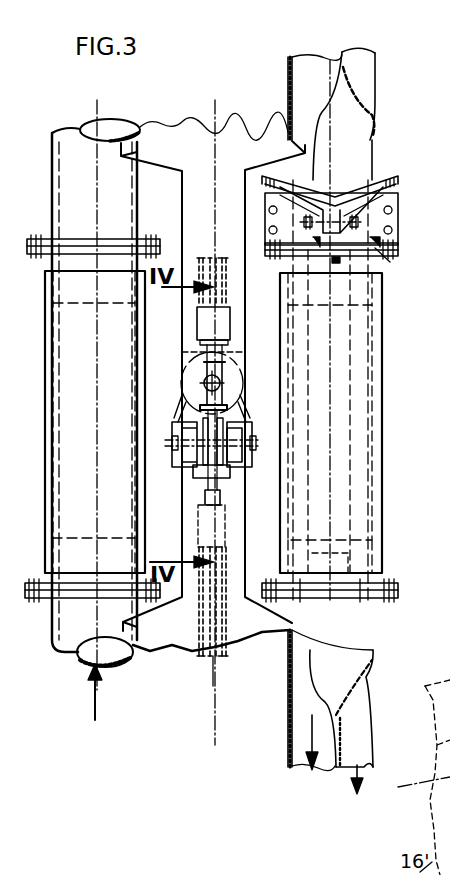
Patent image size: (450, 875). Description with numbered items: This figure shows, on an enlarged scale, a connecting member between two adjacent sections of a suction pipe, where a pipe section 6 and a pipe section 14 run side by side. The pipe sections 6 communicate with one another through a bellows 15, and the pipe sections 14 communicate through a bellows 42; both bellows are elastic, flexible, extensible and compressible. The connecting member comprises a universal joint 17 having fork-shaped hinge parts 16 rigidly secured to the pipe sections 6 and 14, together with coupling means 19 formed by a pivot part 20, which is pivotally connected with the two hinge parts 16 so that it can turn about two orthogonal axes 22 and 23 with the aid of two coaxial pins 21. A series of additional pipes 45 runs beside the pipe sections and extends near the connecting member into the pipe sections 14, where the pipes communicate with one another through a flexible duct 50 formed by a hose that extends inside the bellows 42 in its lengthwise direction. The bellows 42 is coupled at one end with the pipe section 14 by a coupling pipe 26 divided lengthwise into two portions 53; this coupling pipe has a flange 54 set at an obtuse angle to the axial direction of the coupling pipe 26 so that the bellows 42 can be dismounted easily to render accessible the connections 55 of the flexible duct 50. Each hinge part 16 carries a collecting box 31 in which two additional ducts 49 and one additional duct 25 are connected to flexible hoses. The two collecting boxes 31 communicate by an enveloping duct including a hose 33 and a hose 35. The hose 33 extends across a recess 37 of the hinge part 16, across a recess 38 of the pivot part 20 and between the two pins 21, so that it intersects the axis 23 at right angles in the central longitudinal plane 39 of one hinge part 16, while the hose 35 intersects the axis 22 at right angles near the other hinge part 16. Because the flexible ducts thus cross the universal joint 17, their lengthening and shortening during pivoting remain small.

The pipe section 6 is at (122, 124).
The pipe section 14 is at (300, 97).
The bellows 15 is at (118, 432).
The fork-shaped hinge part 16 is at (227, 210).
The universal joint 17 is at (256, 366).
The coupling means 19 is at (178, 388).
The pivot part 20 is at (245, 418).
The coaxial pin 21 is at (178, 441).
The axis 22 is at (190, 403).
The axis 23 is at (182, 452).
The additional duct 25 is at (203, 258).
The coupling pipe 26 is at (409, 186).
The collecting box 31 is at (197, 321).
The hose 33 is at (246, 458).
The hose 35 is at (390, 238).
The recess 37 is at (222, 471).
The recess 38 is at (245, 436).
The central longitudinal plane 39 is at (214, 684).
The bellows 42 is at (375, 440).
The additional pipe 45 is at (355, 76).
The additional duct 49 is at (221, 258).
The flexible duct 50 is at (352, 408).
The portion 53 is at (268, 210).
The flange 54 is at (375, 182).
The connection 55 is at (357, 222).